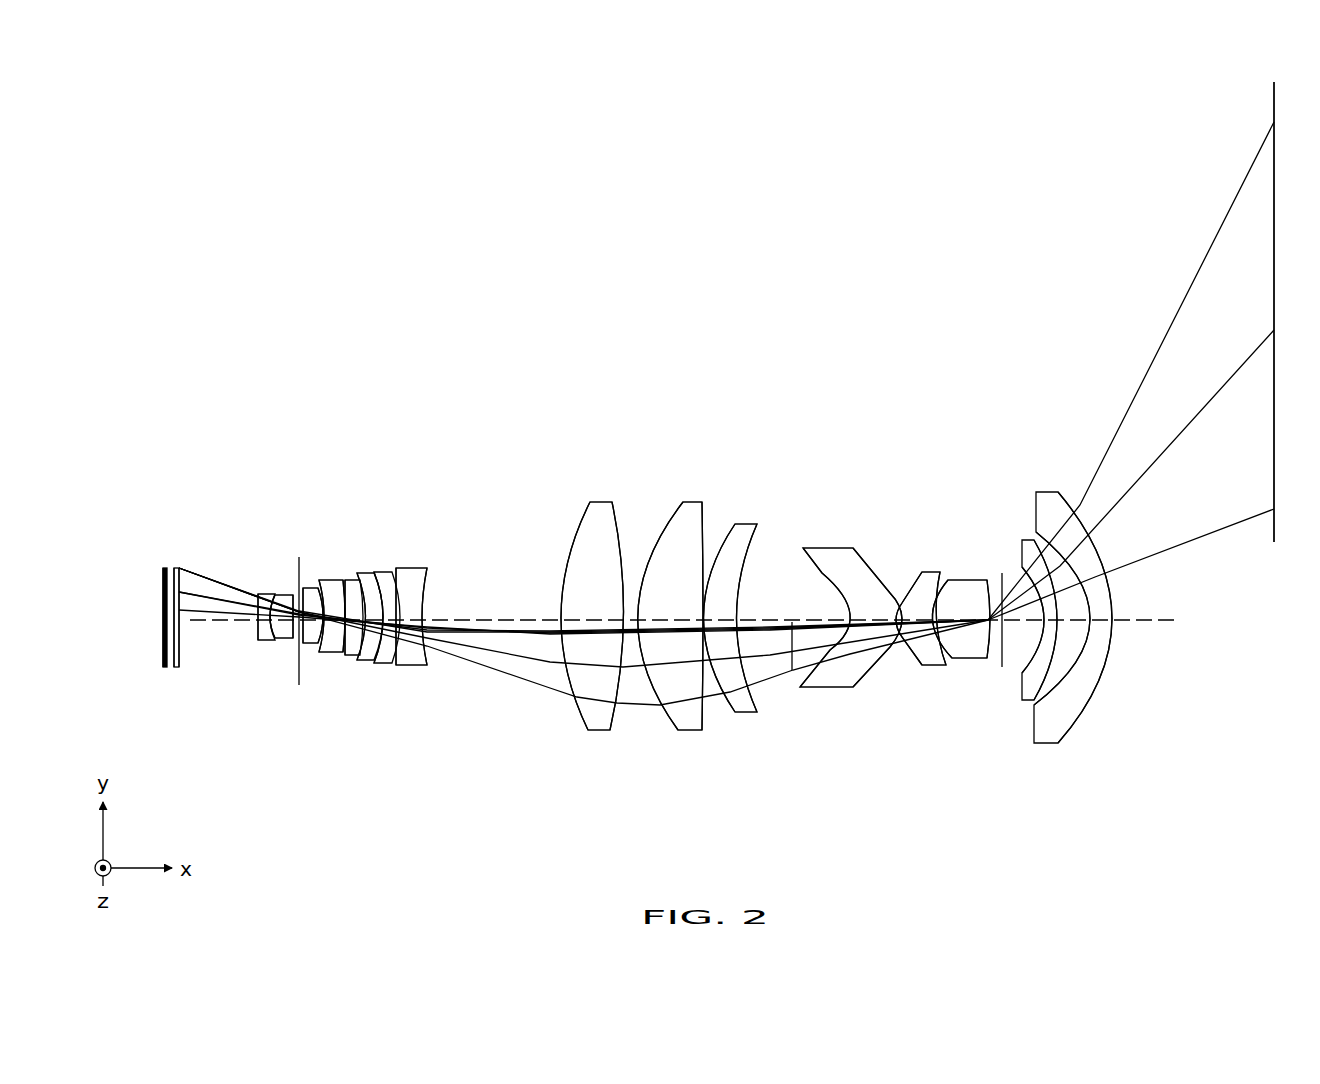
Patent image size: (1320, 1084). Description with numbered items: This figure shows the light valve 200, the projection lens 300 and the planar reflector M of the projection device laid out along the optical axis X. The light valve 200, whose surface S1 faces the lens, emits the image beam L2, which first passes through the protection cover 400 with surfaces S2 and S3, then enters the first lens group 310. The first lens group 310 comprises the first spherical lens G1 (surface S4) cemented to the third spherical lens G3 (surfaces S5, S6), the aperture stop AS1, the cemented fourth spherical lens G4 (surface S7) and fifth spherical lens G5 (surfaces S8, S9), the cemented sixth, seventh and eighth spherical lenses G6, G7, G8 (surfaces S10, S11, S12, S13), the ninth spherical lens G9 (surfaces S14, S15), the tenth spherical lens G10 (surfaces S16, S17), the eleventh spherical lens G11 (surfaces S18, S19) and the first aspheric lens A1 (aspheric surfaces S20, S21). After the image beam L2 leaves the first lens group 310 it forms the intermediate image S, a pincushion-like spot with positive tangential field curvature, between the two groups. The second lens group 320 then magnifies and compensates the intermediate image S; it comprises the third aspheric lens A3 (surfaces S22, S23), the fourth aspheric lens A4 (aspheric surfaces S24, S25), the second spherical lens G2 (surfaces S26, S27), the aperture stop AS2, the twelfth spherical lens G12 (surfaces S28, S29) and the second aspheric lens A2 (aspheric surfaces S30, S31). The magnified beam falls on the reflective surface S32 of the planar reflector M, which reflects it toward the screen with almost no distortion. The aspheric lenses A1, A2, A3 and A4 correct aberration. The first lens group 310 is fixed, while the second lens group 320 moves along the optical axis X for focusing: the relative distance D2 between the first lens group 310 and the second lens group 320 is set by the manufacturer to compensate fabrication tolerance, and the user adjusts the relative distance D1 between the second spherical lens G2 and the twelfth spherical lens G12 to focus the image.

The light valve 200 is at (165, 668).
The protection cover 400 is at (176, 668).
The projection lens 300 is at (1278, 844).
The first lens group 310 is at (752, 806).
The second lens group 320 is at (1038, 806).
The image beam L2 is at (212, 594).
The planar reflector M is at (1276, 530).
The optical axis X is at (1140, 632).
The intermediate image S is at (792, 672).
The aperture stop AS1 is at (298, 560).
The aperture stop AS2 is at (1002, 668).
The relative distance D1 is at (988, 620).
The relative distance D2 is at (737, 620).
The first spherical lens G1 is at (263, 641).
The second spherical lens G2 is at (965, 659).
The third spherical lens G3 is at (285, 640).
The fourth spherical lens G4 is at (312, 645).
The fifth spherical lens G5 is at (332, 653).
The sixth spherical lens G6 is at (352, 656).
The seventh spherical lens G7 is at (372, 662).
The eighth spherical lens G8 is at (385, 665).
The ninth spherical lens G9 is at (410, 666).
The tenth spherical lens G10 is at (600, 731).
The eleventh spherical lens G11 is at (692, 731).
The twelfth spherical lens G12 is at (1028, 702).
The first aspheric lens A1 is at (745, 713).
The second aspheric lens A2 is at (1045, 745).
The third aspheric lens A3 is at (850, 688).
The fourth aspheric lens A4 is at (935, 666).
The surface S1 is at (174, 572).
The surface S2 is at (164, 582).
The surface S3 is at (180, 572).
The surface S4 is at (257, 599).
The surface S5 is at (272, 598).
The surface S6 is at (292, 598).
The surface S7 is at (304, 594).
The surface S8 is at (321, 598).
The surface S9 is at (322, 587).
The surface S10 is at (344, 594).
The surface S11 is at (348, 606).
The surface S12 is at (361, 583).
The surface S13 is at (377, 579).
The surface S14 is at (397, 575).
The surface S15 is at (426, 574).
The surface S16 is at (578, 526).
The surface S17 is at (618, 520).
The surface S18 is at (671, 509).
The surface S19 is at (704, 507).
The surface S20 is at (728, 524).
The surface S21 is at (758, 546).
The surface S22 is at (807, 556).
The surface S23 is at (861, 557).
The surface S24 is at (921, 582).
The surface S25 is at (942, 574).
The surface S26 is at (955, 582).
The surface S27 is at (986, 582).
The surface S28 is at (1021, 562).
The surface S29 is at (1036, 545).
The surface S30 is at (1050, 548).
The surface S31 is at (1090, 522).
The surface S32 is at (1271, 92).